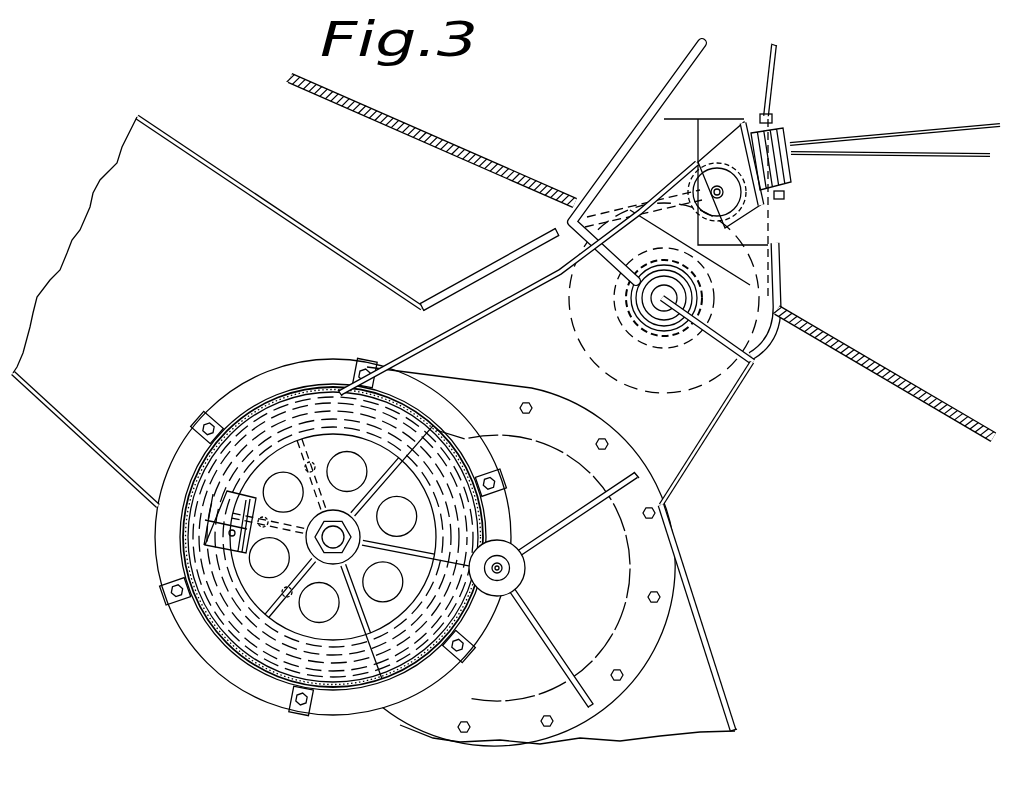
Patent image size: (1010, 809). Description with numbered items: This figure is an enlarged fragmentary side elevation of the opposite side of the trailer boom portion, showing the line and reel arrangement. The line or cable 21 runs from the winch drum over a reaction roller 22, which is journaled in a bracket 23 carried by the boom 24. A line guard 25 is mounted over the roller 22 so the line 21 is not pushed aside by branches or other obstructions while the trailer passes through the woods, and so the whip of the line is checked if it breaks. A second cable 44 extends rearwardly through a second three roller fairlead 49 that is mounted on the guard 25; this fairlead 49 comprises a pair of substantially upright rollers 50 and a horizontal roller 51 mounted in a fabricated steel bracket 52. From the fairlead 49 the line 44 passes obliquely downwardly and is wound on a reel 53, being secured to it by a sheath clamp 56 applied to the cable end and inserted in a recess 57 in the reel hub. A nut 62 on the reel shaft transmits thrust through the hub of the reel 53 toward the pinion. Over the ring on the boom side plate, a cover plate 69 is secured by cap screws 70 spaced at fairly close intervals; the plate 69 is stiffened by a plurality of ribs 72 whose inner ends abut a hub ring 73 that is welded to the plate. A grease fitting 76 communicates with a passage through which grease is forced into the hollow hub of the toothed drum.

The line or cable 21 is at (466, 152).
The reaction roller 22 is at (712, 382).
The bracket 23 is at (490, 267).
The boom 24 is at (265, 209).
The line guard 25 is at (663, 87).
The cable 44 is at (510, 302).
The second three roller fairlead 49 is at (766, 212).
The upright rollers 50 is at (792, 174).
The horizontal roller 51 is at (692, 188).
The fabricated steel bracket 52 is at (745, 122).
The reel 53 is at (253, 410).
The sheath clamp 56 is at (262, 496).
The recess 57 is at (282, 571).
The nut 62 is at (334, 513).
The cover plate 69 is at (180, 627).
The cap screws 70 is at (615, 668).
The ribs 72 is at (571, 518).
The hub ring 73 is at (523, 580).
The grease fitting 76 is at (503, 567).